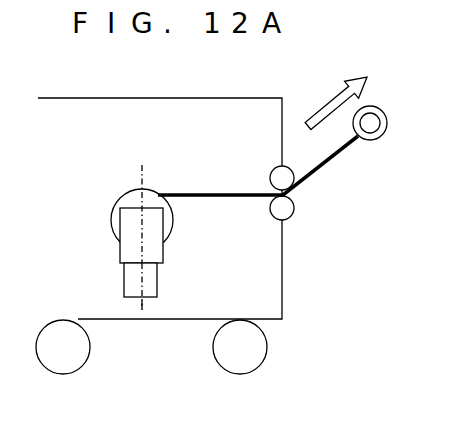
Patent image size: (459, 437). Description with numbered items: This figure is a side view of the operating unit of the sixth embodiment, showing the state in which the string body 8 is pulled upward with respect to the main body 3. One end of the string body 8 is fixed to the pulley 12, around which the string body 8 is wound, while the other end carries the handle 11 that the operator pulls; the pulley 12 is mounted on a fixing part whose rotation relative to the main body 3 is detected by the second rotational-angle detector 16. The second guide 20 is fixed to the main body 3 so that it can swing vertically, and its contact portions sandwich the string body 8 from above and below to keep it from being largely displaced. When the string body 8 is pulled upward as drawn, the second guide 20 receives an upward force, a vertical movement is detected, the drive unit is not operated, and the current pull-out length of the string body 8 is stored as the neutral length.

The main body 3 is at (159, 236).
The string body 8 is at (225, 197).
The handle 11 is at (370, 141).
The pulley 12 is at (128, 197).
The second rotational-angle detector 16 is at (131, 288).
The second guide 20 is at (275, 170).